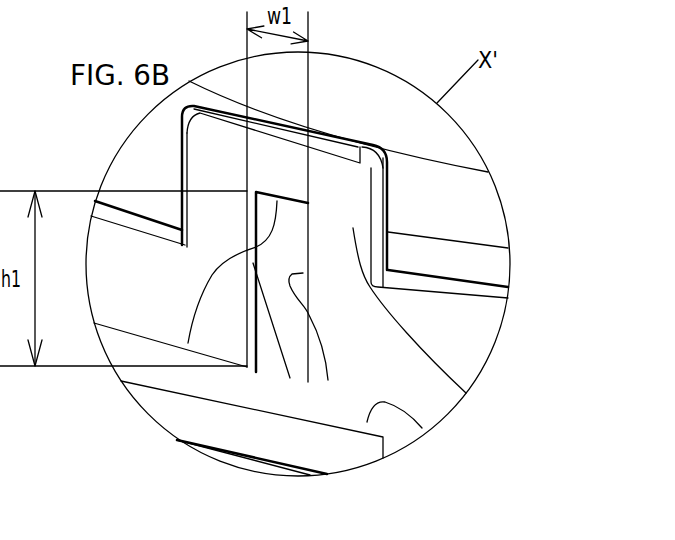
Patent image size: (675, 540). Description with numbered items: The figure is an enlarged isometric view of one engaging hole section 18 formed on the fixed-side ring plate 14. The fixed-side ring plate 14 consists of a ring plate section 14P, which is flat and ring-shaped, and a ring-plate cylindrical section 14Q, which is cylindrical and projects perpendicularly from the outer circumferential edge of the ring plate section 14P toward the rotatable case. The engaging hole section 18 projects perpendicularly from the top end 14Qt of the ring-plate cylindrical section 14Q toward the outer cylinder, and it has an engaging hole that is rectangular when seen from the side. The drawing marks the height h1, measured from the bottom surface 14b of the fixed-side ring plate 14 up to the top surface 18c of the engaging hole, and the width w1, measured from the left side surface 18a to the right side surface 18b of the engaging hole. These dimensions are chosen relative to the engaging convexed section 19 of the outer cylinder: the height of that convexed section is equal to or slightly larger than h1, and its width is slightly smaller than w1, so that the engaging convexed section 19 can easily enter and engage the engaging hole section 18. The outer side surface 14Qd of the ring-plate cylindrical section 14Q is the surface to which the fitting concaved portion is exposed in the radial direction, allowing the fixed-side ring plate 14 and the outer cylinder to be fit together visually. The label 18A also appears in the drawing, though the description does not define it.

The engaging convexed section 19 is at (27, 0).
The ring-plate cylindrical section 14Q is at (147, 295).
The top end of the ring-plate cylindrical section 14Qt is at (487, 293).
The outer side surface of the ring-plate cylindrical section 14Qd is at (480, 330).
The ring plate section 14P is at (220, 427).
The fixed-side ring plate 14 is at (395, 415).
The bottom surface of the fixed-side ring plate 14b is at (404, 385).
The engaging hole section 18 is at (248, 368).
The top surface of the engaging hole 18c is at (188, 343).
The left side surface of the engaging hole 18a is at (290, 378).
The engaging piece 18A is at (273, 405).
The right side surface of the engaging hole 18b is at (328, 380).